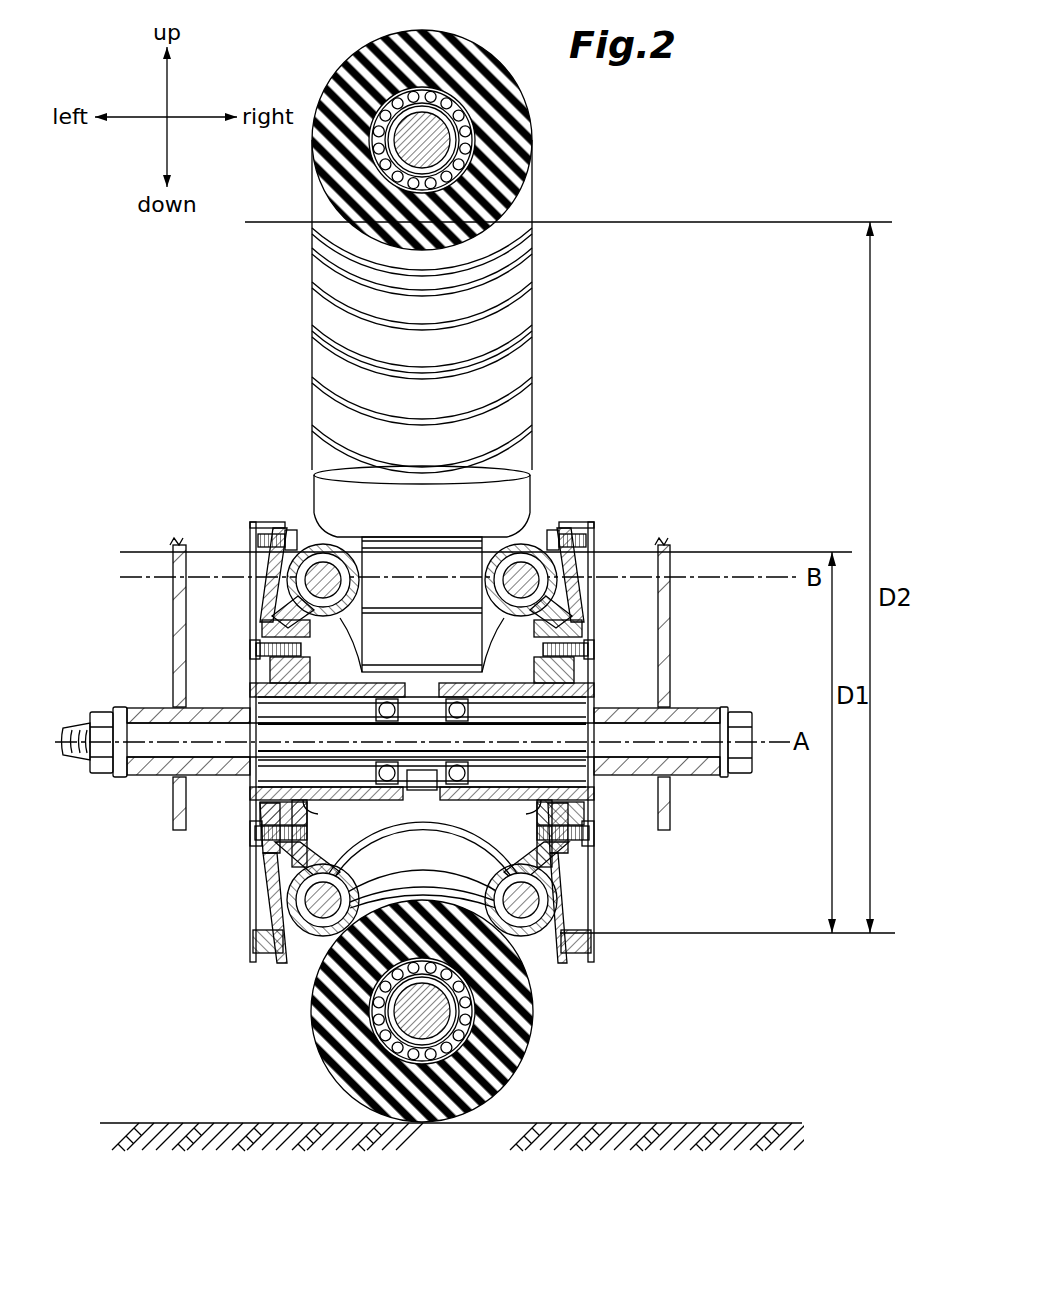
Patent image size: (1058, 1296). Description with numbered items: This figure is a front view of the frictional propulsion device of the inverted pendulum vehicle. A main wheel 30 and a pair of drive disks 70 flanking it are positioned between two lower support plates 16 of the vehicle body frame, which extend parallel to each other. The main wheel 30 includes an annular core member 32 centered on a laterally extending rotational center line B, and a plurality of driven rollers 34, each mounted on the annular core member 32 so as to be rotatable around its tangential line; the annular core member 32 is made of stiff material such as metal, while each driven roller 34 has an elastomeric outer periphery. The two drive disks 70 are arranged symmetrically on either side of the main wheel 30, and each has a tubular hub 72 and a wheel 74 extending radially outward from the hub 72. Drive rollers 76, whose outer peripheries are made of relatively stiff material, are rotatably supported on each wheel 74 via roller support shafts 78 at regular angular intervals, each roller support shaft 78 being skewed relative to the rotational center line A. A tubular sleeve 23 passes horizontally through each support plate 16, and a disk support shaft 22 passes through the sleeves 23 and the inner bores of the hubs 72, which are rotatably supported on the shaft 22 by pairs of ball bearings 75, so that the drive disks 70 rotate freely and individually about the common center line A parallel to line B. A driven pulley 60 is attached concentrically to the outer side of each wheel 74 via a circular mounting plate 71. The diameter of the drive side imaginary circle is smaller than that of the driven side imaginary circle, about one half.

The lower support plate 16 is at (172, 600).
The disk support shaft 22 is at (703, 716).
The tubular sleeve 23 is at (146, 708).
The main wheel 30 is at (506, 1089).
The annular core member 32 is at (480, 1010).
The driven roller 34 is at (535, 378).
The driven pulley 60 is at (264, 961).
The drive disk 70 is at (255, 852).
The circular mounting plate 71 is at (268, 533).
The tubular hub 72 is at (268, 606).
The wheel 74 is at (568, 628).
The ball bearing 75 is at (582, 690).
The drive roller 76 is at (284, 542).
The roller support shaft 78 is at (340, 606).